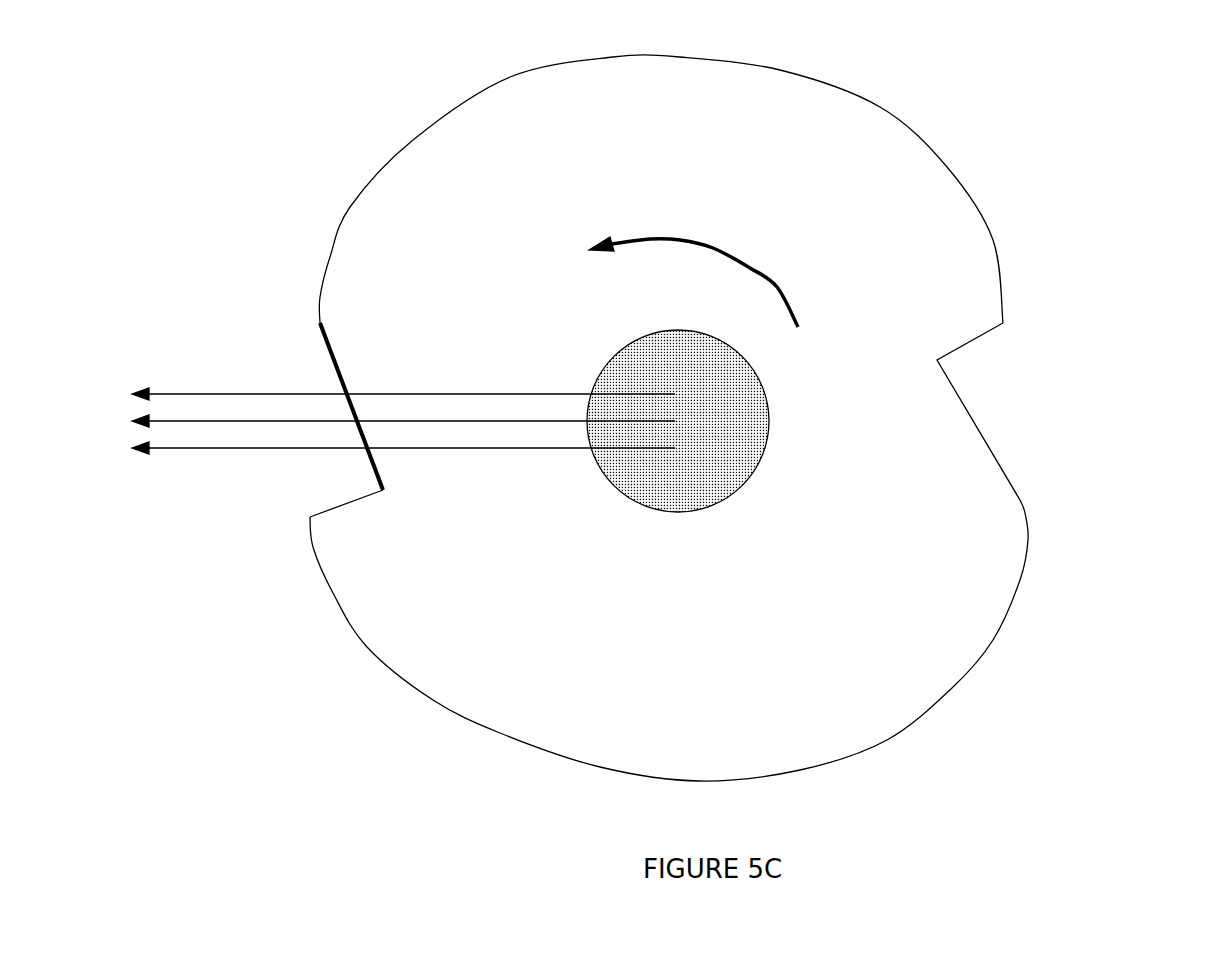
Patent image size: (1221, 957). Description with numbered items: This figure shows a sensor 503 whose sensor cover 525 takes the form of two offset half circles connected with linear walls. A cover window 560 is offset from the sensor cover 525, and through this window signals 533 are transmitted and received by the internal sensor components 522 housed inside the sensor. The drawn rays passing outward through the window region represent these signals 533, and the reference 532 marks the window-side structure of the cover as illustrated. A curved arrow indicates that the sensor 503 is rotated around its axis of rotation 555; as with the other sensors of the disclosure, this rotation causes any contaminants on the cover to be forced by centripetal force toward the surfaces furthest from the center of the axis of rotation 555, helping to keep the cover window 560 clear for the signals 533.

The sensor 503 is at (840, 678).
The sensor cover 525 is at (995, 243).
The reflective mirror surface 532 is at (320, 323).
The signals 533 is at (305, 448).
The cover window 560 is at (337, 372).
The internal sensor components 522 is at (685, 370).
The axis of rotation 555 is at (777, 287).